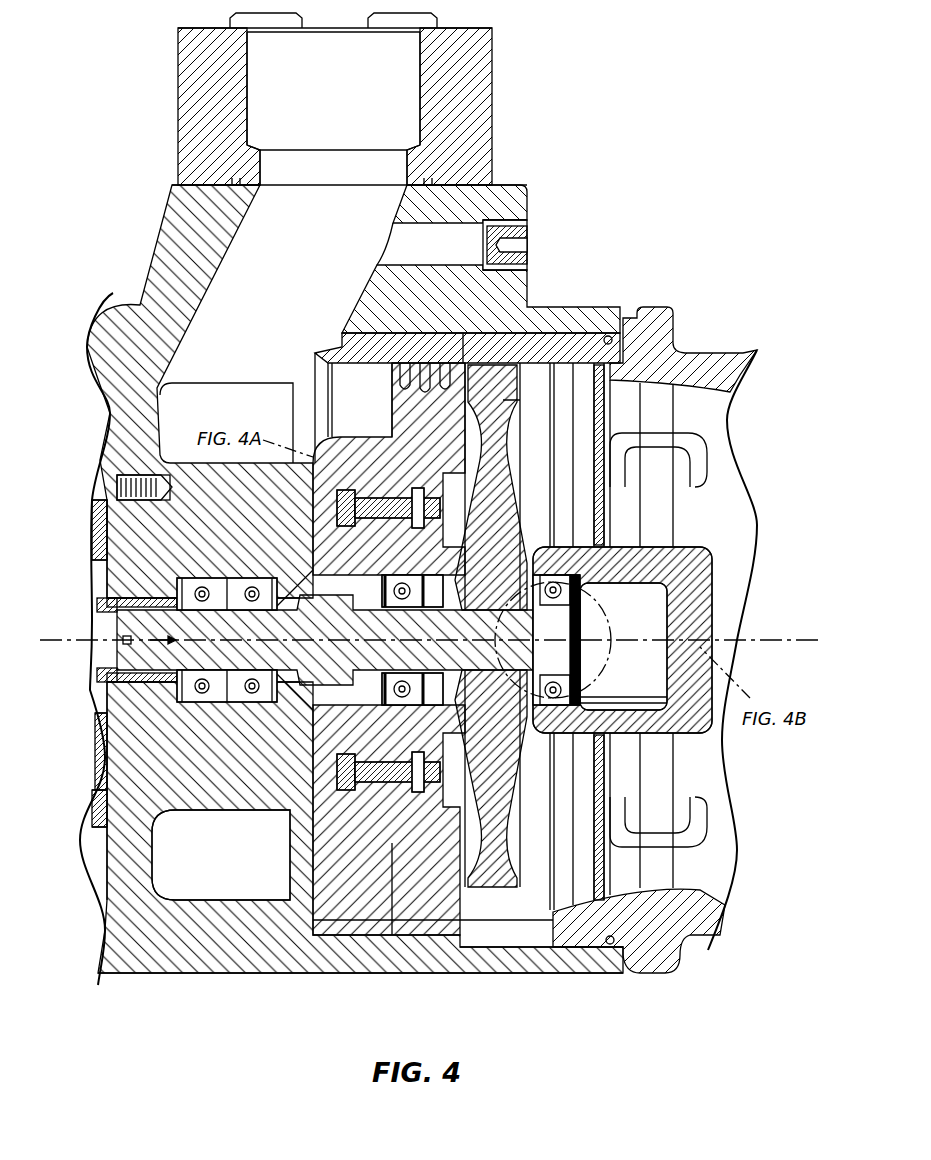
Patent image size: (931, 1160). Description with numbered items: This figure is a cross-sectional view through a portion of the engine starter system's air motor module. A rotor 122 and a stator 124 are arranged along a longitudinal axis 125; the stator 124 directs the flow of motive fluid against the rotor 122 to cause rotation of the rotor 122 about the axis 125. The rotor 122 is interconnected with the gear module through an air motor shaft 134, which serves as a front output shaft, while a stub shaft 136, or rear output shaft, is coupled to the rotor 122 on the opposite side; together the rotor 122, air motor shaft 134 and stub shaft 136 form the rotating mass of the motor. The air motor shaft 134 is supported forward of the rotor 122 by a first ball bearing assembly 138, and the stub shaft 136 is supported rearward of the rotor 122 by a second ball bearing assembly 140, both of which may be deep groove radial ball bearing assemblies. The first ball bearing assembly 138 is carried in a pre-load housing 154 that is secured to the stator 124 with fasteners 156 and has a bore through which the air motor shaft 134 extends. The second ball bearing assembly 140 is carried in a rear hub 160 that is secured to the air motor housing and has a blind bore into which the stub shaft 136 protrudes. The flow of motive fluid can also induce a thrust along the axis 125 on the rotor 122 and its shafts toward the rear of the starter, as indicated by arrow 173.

The rotor 122 is at (503, 400).
The stator 124 is at (410, 367).
The longitudinal axis 125 is at (770, 640).
The air motor shaft 134 is at (350, 667).
The stub shaft 136 is at (583, 620).
The first ball bearing assembly 138 is at (363, 567).
The second ball bearing assembly 140 is at (560, 707).
The pre-load housing 154 is at (350, 460).
The fasteners 156 is at (373, 567).
The rear hub 160 is at (700, 578).
The arrow 173 is at (157, 635).